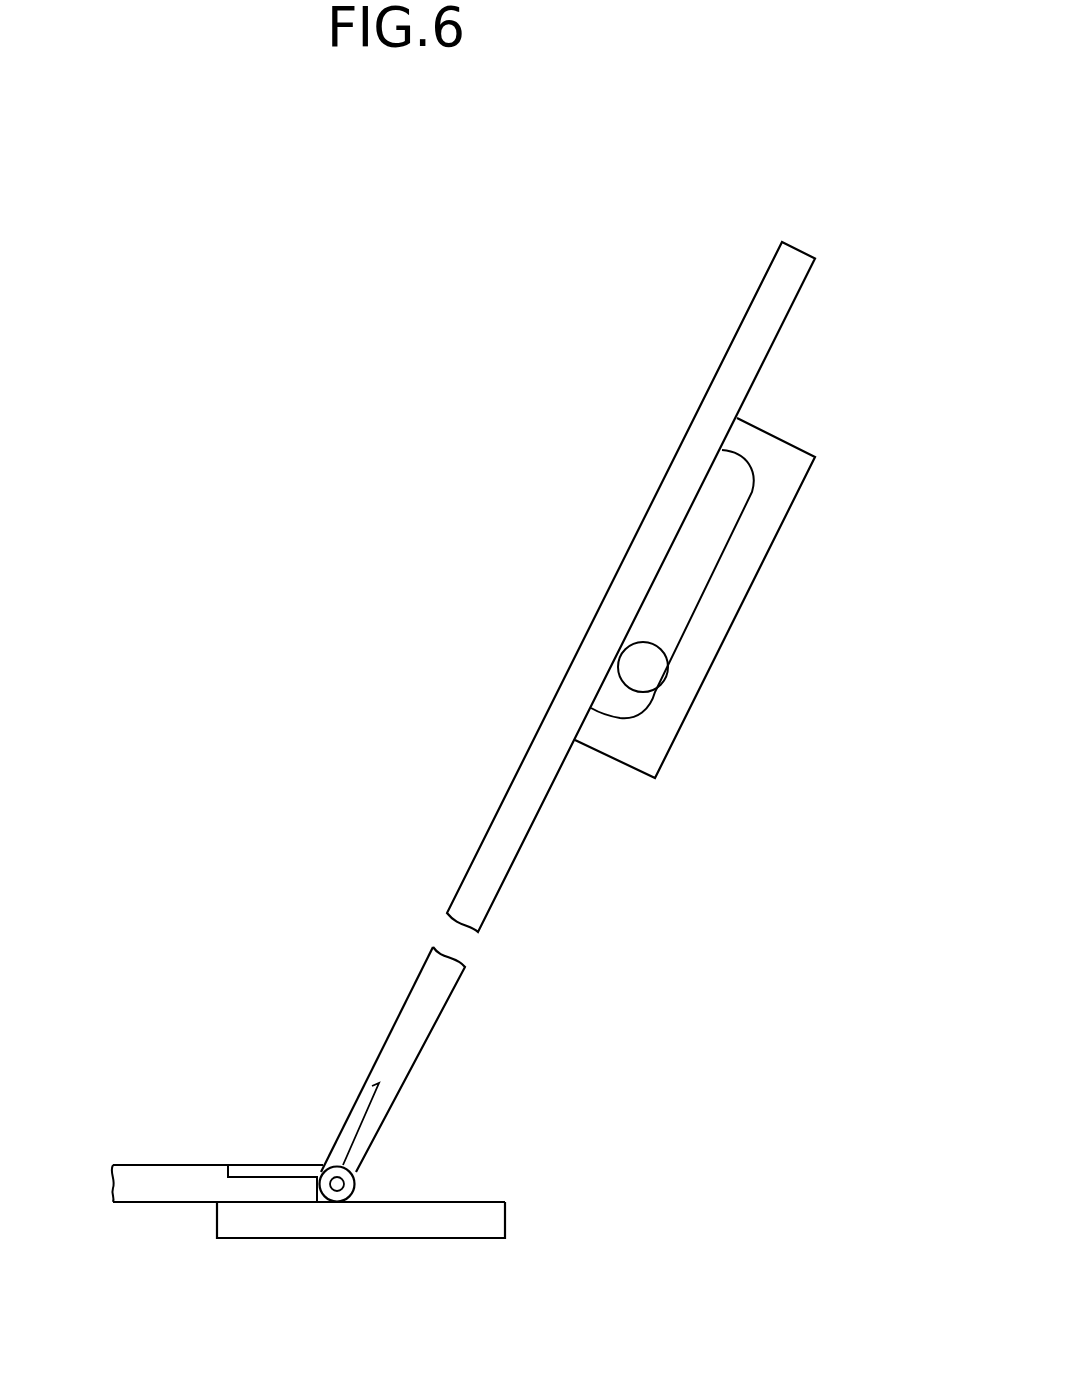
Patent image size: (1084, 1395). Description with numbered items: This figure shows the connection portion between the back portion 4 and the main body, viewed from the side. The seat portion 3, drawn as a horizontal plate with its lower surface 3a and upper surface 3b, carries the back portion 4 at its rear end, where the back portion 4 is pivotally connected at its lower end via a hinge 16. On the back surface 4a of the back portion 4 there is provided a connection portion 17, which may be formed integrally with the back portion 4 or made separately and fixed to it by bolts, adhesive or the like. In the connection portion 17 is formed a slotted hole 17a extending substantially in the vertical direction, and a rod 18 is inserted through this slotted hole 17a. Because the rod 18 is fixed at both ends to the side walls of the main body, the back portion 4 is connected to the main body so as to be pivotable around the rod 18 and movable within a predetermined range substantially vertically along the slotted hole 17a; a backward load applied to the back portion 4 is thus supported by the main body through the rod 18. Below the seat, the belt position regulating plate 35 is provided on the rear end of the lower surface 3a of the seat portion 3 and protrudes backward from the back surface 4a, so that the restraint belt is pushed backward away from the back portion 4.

The seat portion 3 is at (192, 1180).
The lower surface 3a is at (143, 1202).
The upper surface 3b is at (133, 1165).
The back portion 4 is at (538, 735).
The back surface 4a is at (516, 860).
The hinge 16 is at (345, 1176).
The connection portion 17 is at (735, 562).
The slotted hole 17a is at (720, 510).
The rod 18 is at (638, 668).
The belt position regulating plate 35 is at (323, 1222).